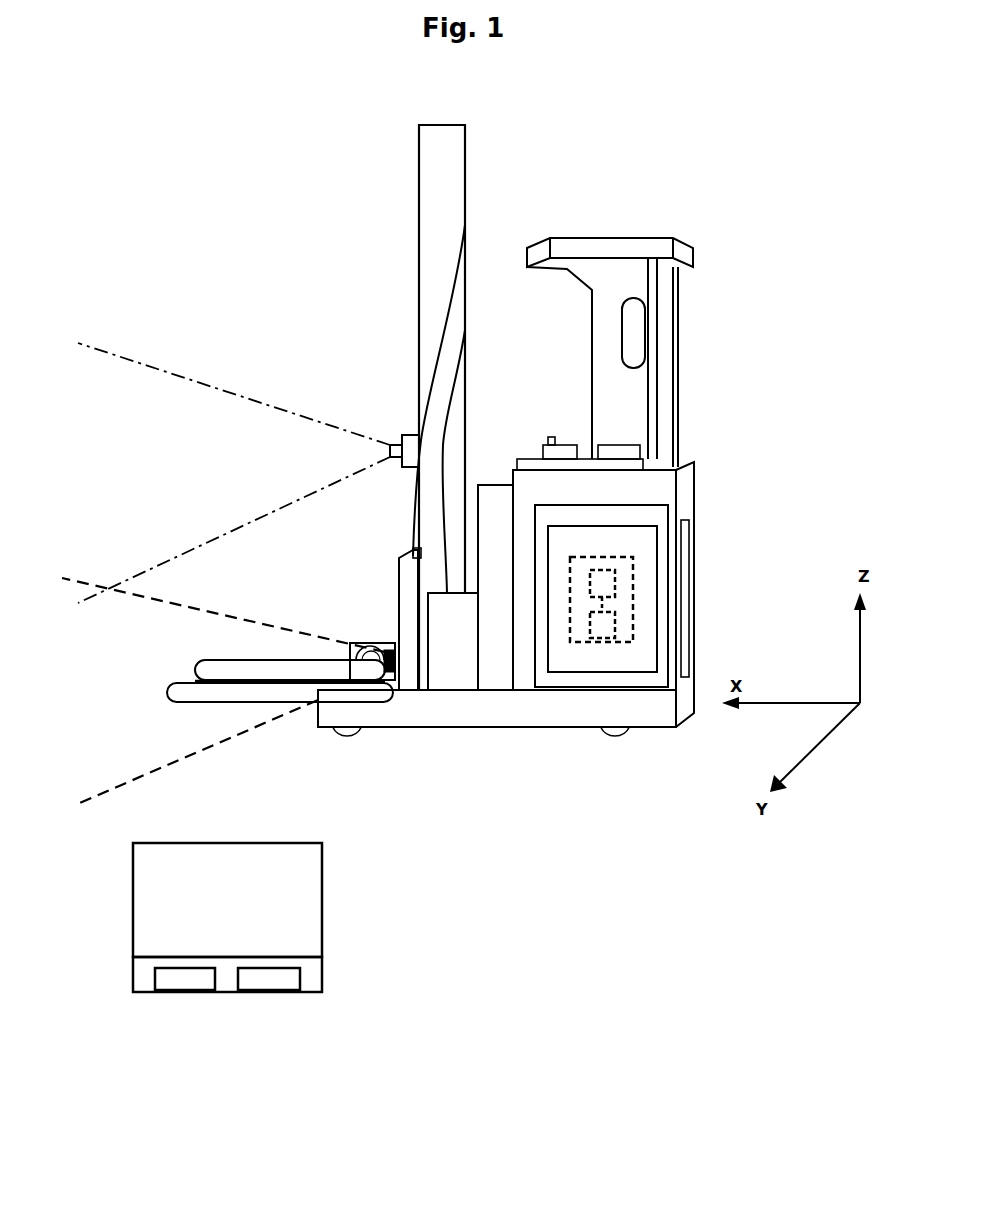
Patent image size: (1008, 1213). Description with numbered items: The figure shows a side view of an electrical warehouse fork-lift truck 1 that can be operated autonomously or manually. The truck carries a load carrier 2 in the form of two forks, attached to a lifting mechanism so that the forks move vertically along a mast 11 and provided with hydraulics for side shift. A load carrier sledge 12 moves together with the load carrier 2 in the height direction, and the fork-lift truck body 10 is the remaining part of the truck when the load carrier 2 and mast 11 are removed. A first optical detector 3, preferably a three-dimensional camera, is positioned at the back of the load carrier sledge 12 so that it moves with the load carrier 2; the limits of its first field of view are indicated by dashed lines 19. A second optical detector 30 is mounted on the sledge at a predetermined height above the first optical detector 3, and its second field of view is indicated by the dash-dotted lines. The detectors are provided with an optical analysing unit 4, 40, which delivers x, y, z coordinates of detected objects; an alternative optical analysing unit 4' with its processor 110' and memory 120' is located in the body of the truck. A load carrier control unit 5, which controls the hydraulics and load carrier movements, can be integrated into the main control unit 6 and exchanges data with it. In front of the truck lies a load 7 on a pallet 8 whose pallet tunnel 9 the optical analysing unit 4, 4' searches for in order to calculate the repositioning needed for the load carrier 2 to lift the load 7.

The fork-lift truck 1 is at (338, 329).
The load carrier 2 is at (232, 660).
The first optical detector 3 is at (365, 685).
The optical analysing unit 4 is at (311, 701).
The optical analysing unit 4' is at (674, 576).
The load carrier control unit 5 is at (640, 655).
The main control unit 6 is at (643, 515).
The load 7 is at (273, 883).
The pallet 8 is at (313, 972).
The pallet tunnel 9 is at (273, 977).
The fork-lift truck body 10 is at (500, 628).
The mast 11 is at (428, 247).
The load carrier sledge 12 is at (410, 648).
The dashed lines 19 is at (158, 766).
The second optical detector 30 is at (396, 441).
The optical analysing unit 40 is at (396, 466).
The processor 110' is at (703, 545).
The memory 120' is at (631, 710).